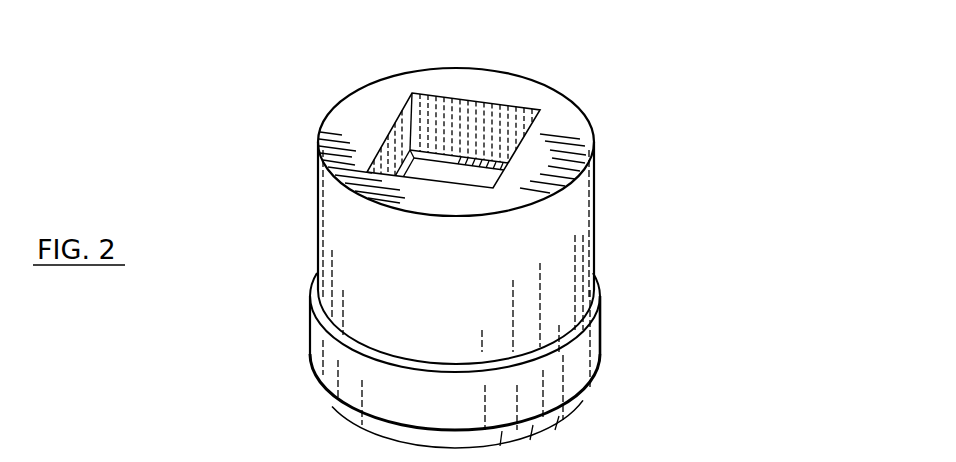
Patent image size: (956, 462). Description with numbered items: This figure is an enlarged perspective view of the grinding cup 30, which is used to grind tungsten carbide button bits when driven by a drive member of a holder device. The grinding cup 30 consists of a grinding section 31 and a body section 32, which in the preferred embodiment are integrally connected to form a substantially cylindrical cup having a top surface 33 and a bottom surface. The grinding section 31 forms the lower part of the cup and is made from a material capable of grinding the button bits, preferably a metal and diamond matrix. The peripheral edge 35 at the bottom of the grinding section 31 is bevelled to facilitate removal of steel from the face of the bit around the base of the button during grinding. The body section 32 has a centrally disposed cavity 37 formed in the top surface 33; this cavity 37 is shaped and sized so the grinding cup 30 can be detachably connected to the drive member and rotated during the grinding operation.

The grinding cup 30 is at (600, 65).
The grinding section 31 is at (600, 338).
The body section 32 is at (595, 248).
The top surface 33 is at (365, 123).
The peripheral edge 35 is at (381, 427).
The cavity 37 is at (477, 122).